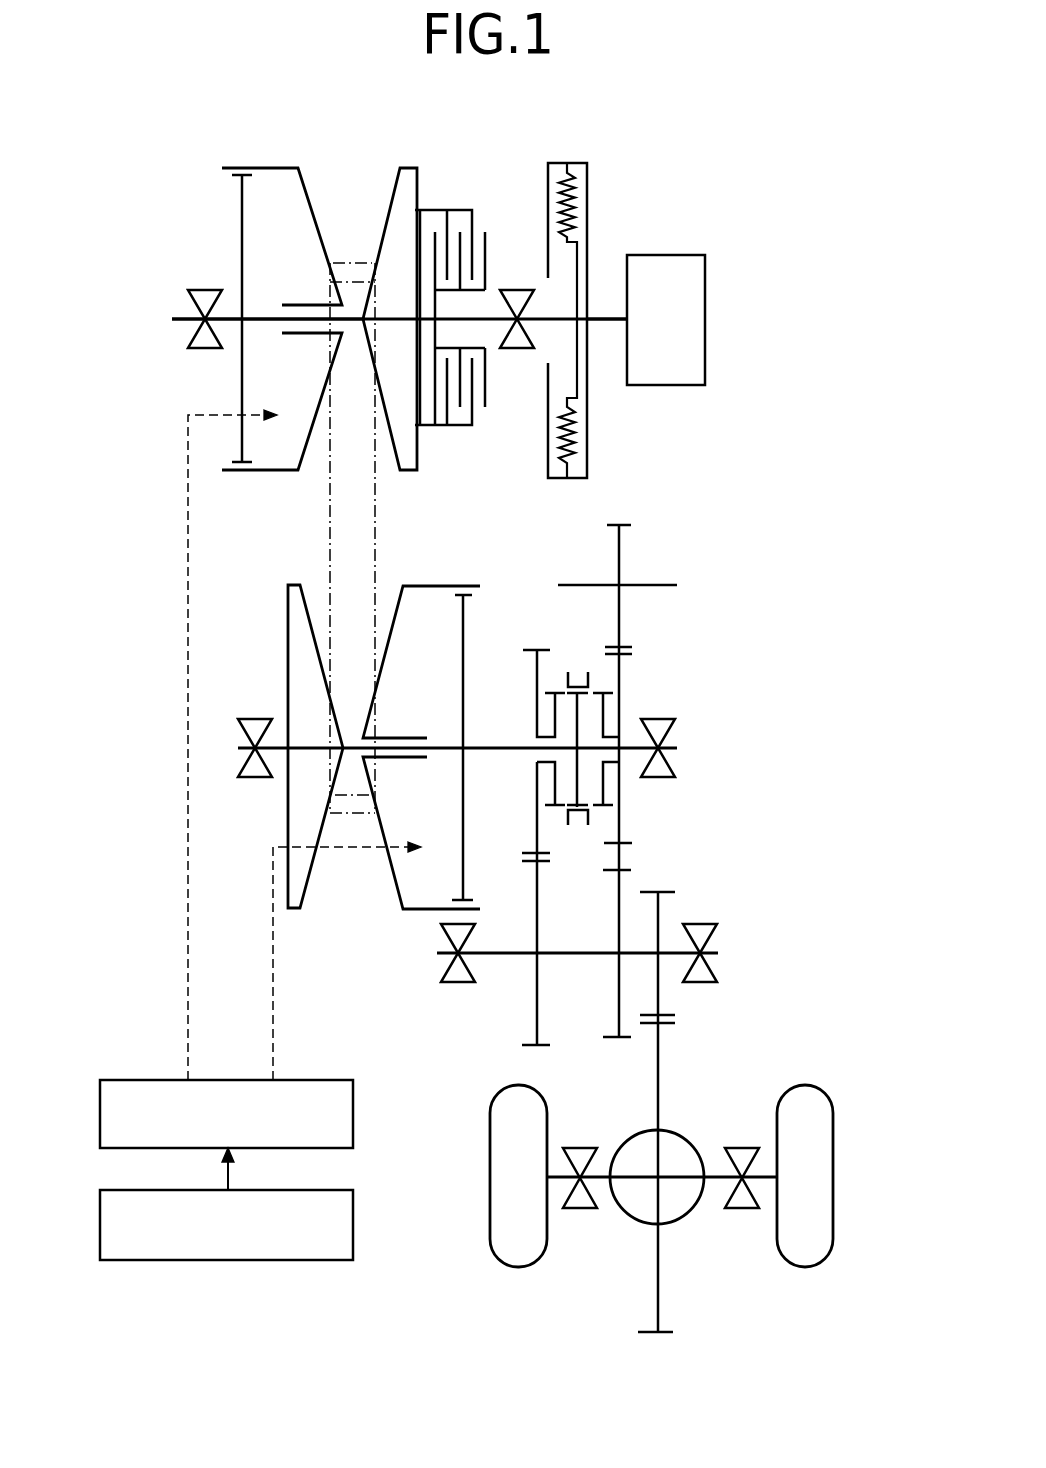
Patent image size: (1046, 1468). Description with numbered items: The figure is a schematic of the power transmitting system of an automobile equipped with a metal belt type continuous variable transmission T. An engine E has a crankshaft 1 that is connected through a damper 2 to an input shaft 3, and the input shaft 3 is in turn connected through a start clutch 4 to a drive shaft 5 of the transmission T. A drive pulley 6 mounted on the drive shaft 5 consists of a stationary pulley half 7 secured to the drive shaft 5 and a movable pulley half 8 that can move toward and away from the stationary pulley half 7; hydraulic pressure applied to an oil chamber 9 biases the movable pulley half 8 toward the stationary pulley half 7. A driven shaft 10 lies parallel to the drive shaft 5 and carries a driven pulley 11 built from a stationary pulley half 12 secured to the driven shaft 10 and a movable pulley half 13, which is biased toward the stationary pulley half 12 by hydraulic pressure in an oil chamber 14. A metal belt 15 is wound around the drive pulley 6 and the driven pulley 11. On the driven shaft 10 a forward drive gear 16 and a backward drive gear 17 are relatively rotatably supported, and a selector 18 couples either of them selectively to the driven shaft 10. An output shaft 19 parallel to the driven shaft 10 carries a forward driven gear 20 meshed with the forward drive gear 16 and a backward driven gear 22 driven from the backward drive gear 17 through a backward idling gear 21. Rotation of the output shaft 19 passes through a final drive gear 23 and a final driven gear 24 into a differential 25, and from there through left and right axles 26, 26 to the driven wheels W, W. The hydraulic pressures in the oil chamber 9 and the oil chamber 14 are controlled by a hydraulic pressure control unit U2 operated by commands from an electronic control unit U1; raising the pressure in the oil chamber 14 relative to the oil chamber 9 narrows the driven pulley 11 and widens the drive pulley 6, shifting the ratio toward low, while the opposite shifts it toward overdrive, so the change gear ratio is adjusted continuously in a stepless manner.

The crankshaft 1 is at (604, 324).
The damper 2 is at (601, 203).
The input shaft 3 is at (540, 322).
The start clutch 4 is at (463, 201).
The drive shaft 5 is at (258, 318).
The drive pulley 6 is at (302, 594).
The stationary pulley half 7 is at (400, 200).
The movable pulley half 8 is at (306, 198).
The oil chamber 9 is at (299, 398).
The driven shaft 10 is at (516, 746).
The driven pulley 11 is at (349, 832).
The stationary pulley half 12 is at (290, 623).
The movable pulley half 13 is at (398, 617).
The oil chamber 14 is at (447, 834).
The metal belt 15 is at (378, 541).
The forward drive gear 16 is at (545, 645).
The backward drive gear 17 is at (635, 656).
The selector 18 is at (578, 828).
The output shaft 19 is at (560, 952).
The forward driven gear 20 is at (545, 1047).
The backward idling gear 21 is at (628, 523).
The backward driven gear 22 is at (610, 1042).
The final drive gear 23 is at (667, 890).
The final driven gear 24 is at (664, 1026).
The differential 25 is at (686, 1134).
The axle 26 is at (596, 1179).
The engine E is at (653, 337).
The metal belt type continuous variable transmission T is at (272, 527).
The driven wheel W is at (490, 1251).
The electronic control unit U1 is at (354, 1223).
The hydraulic pressure control unit U2 is at (354, 1113).